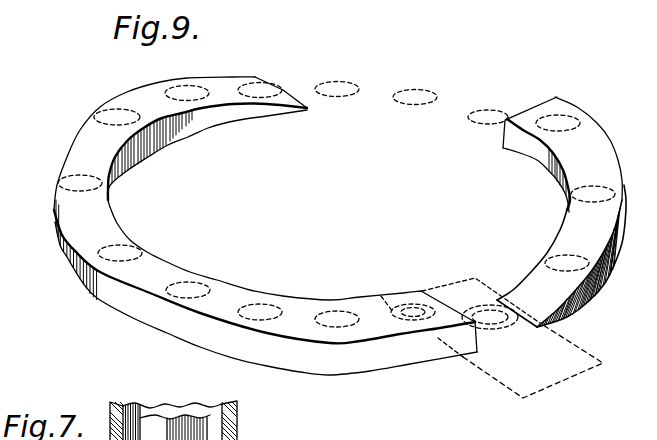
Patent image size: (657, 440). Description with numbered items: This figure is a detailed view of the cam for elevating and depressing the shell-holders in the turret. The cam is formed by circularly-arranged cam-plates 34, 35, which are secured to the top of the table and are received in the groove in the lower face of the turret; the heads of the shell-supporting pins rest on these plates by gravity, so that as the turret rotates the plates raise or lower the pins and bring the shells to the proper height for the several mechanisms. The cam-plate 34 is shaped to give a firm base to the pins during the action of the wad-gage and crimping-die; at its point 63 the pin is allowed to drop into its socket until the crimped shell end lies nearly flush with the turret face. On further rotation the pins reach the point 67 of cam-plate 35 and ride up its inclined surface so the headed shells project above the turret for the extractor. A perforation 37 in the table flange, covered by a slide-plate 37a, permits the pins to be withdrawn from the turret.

The cam-plate 35 is at (80, 233).
The cam-plate 34 is at (548, 306).
The point of cam 35 67 is at (258, 78).
The point of cam 34 63 is at (553, 97).
The perforation 37 is at (483, 302).
The slide-plate 37a is at (570, 363).